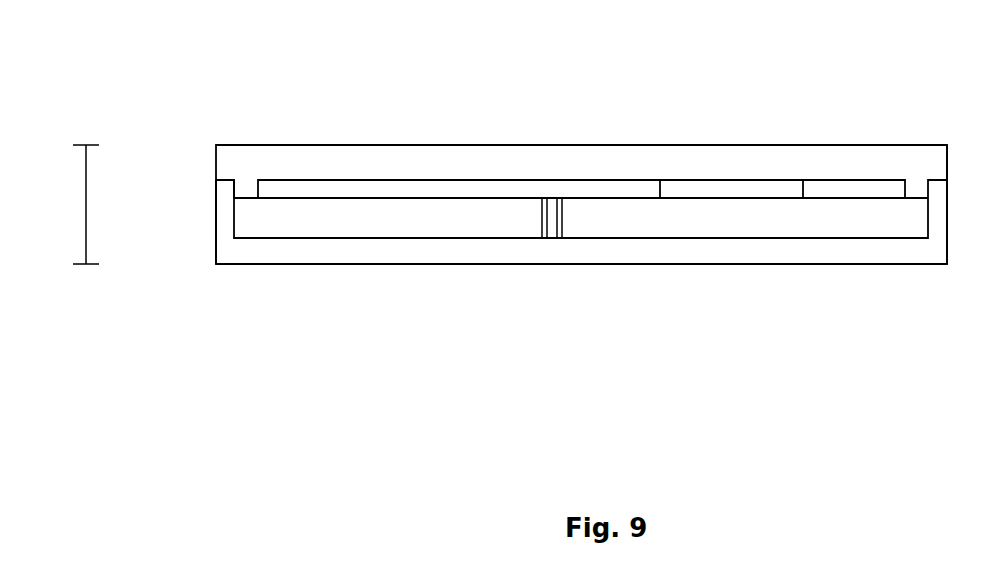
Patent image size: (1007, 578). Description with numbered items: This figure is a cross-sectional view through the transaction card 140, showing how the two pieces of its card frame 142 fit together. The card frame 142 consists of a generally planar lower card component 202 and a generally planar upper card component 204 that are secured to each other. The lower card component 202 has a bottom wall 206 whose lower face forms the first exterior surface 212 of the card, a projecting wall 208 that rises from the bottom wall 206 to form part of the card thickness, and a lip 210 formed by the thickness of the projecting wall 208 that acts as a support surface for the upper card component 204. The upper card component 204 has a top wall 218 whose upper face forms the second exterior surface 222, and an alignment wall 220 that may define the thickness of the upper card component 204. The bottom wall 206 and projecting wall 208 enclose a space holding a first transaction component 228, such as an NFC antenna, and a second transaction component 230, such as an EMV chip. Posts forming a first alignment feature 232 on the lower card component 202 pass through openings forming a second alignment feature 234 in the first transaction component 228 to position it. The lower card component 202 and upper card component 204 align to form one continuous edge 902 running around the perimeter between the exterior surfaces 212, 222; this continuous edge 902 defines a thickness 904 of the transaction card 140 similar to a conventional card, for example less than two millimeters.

The transaction card 140 is at (379, 86).
The card frame 142 is at (216, 145).
The lower card component 202 is at (293, 257).
The upper card component 204 is at (595, 155).
The bottom wall 206 is at (677, 253).
The projecting wall 208 is at (235, 217).
The lip 210 is at (220, 176).
The first exterior surface 212 is at (800, 264).
The top wall 218 is at (337, 165).
The alignment wall 220 is at (247, 183).
The second exterior surface 222 is at (893, 145).
The first transaction component 228 is at (402, 227).
The second transaction component 230 is at (692, 182).
The first alignment feature 232 is at (550, 200).
The second alignment feature 234 is at (562, 238).
The continuous edge 902 is at (217, 214).
The thickness 904 is at (86, 213).